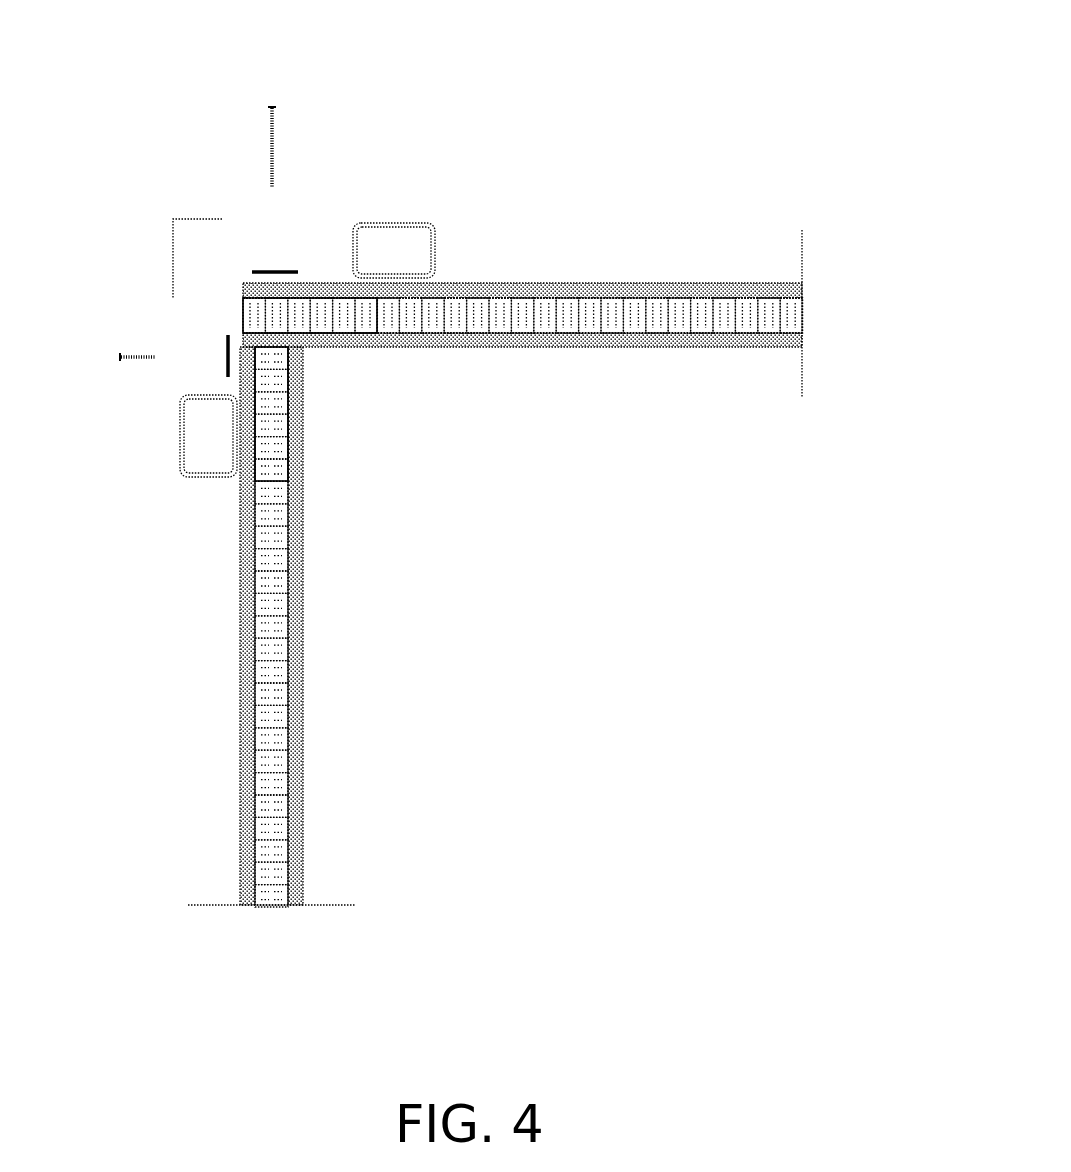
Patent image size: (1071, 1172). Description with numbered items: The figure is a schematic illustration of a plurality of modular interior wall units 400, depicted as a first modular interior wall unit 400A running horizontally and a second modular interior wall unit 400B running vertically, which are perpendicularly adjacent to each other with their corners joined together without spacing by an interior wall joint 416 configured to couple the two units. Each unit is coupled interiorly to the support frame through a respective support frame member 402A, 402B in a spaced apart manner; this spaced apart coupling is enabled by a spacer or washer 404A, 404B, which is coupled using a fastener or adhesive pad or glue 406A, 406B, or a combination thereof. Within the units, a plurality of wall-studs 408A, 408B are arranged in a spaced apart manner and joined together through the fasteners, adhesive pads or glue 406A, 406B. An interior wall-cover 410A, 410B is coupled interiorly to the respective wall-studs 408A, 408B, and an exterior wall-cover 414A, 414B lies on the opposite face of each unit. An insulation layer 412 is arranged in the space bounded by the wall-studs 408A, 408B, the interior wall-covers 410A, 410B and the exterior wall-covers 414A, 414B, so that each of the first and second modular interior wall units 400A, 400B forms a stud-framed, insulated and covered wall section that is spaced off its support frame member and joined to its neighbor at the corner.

The modular interior wall units 400 is at (680, 68).
The first modular interior wall unit 400A is at (538, 292).
The second modular interior wall unit 400B is at (302, 728).
The support frame member 402A is at (393, 237).
The support frame member 402B is at (192, 452).
The spacer or washer 404A is at (260, 272).
The spacer or washer 404B is at (227, 363).
The fastener or adhesive pad or glue 406A is at (275, 122).
The fastener or adhesive pad or glue 406B is at (123, 357).
The wall-studs 408A is at (345, 307).
The wall-studs 408B is at (282, 452).
The interior wall-cover 410A is at (510, 333).
The interior wall-cover 410B is at (295, 555).
The insulation layer 412 is at (280, 643).
The exterior wall-cover 414A is at (723, 290).
The exterior wall-cover 414B is at (248, 723).
The interior wall joint 416 is at (207, 258).